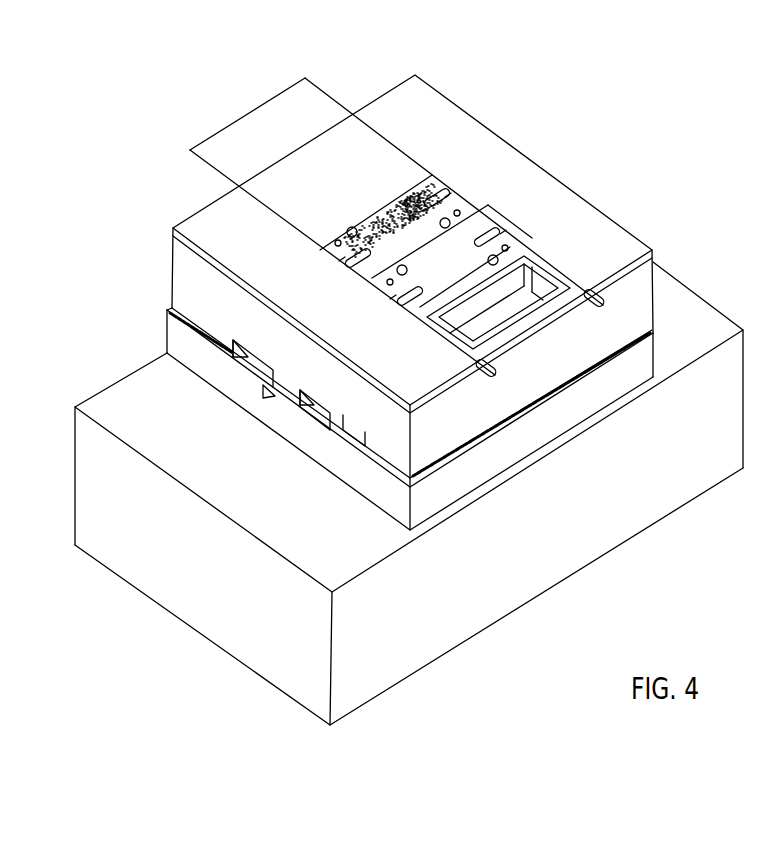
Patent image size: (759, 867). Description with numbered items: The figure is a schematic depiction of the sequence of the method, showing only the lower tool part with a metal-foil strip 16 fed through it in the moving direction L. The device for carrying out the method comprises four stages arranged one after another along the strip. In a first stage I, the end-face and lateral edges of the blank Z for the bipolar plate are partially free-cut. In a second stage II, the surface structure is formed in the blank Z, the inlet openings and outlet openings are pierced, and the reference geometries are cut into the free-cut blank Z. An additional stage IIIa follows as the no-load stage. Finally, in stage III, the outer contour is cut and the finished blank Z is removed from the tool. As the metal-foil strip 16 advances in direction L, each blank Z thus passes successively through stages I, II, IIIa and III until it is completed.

The metal-foil strip 16 is at (223, 165).
The first stage I is at (317, 196).
The second stage II is at (413, 182).
The stage III is at (560, 280).
The additional stage IIIa is at (543, 283).
The moving direction L is at (220, 100).
The blank Z is at (365, 166).